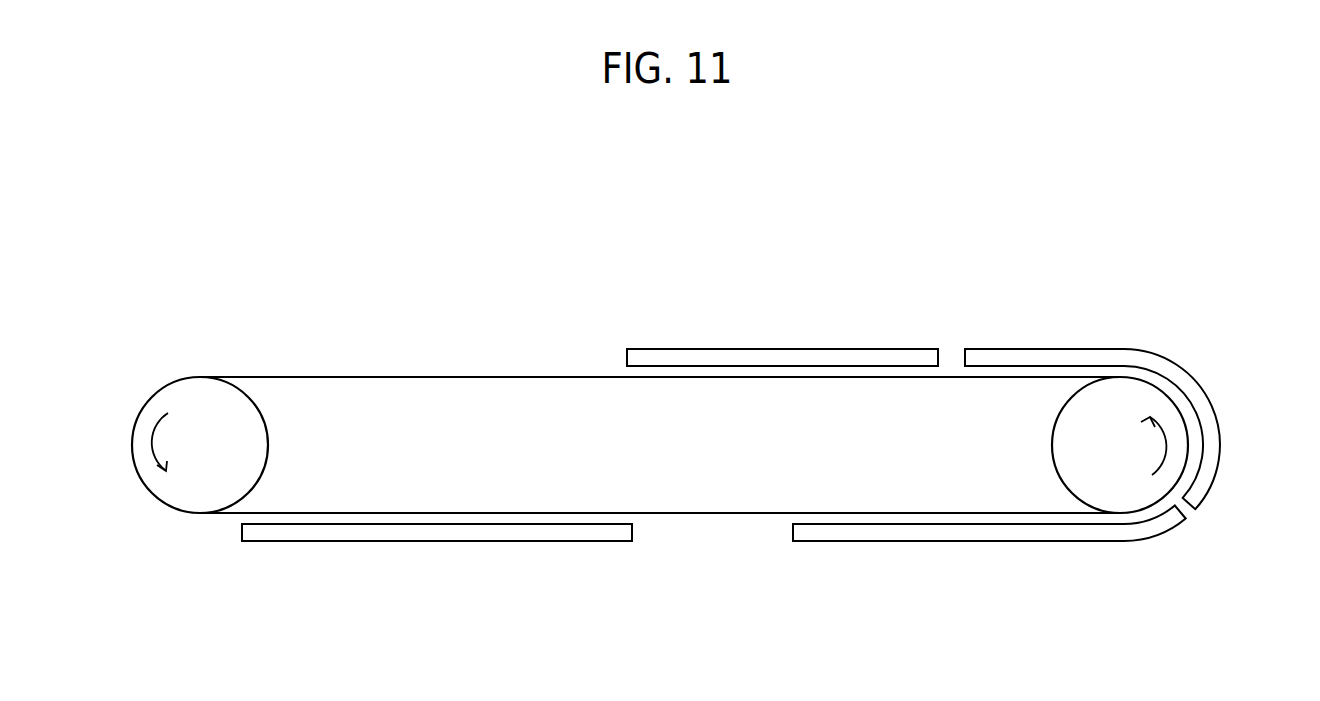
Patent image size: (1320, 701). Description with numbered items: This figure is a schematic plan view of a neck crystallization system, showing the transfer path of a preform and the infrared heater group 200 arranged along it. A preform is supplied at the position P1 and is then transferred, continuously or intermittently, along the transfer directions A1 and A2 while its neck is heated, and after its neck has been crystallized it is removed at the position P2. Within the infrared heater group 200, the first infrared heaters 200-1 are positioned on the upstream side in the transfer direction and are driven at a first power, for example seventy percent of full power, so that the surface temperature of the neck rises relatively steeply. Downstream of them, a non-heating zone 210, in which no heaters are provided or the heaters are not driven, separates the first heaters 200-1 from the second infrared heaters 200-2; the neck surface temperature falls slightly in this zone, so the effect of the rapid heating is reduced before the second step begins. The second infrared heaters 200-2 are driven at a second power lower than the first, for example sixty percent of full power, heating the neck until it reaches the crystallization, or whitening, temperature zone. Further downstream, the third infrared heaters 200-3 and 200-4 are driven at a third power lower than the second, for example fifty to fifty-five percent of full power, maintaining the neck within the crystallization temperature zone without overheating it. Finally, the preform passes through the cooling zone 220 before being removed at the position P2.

The infrared heater group 200 is at (601, 569).
The first infrared heaters 200-1 is at (452, 532).
The second infrared heaters 200-2 is at (1023, 535).
The third infrared heaters 200-3 is at (1205, 405).
The third infrared heaters 200-4 is at (765, 355).
The non-heating zone 210 is at (631, 567).
The cooling zone 220 is at (627, 321).
The transfer direction A1 is at (572, 499).
The transfer direction A2 is at (573, 390).
The supply position P1 is at (158, 509).
The removal position P2 is at (158, 373).